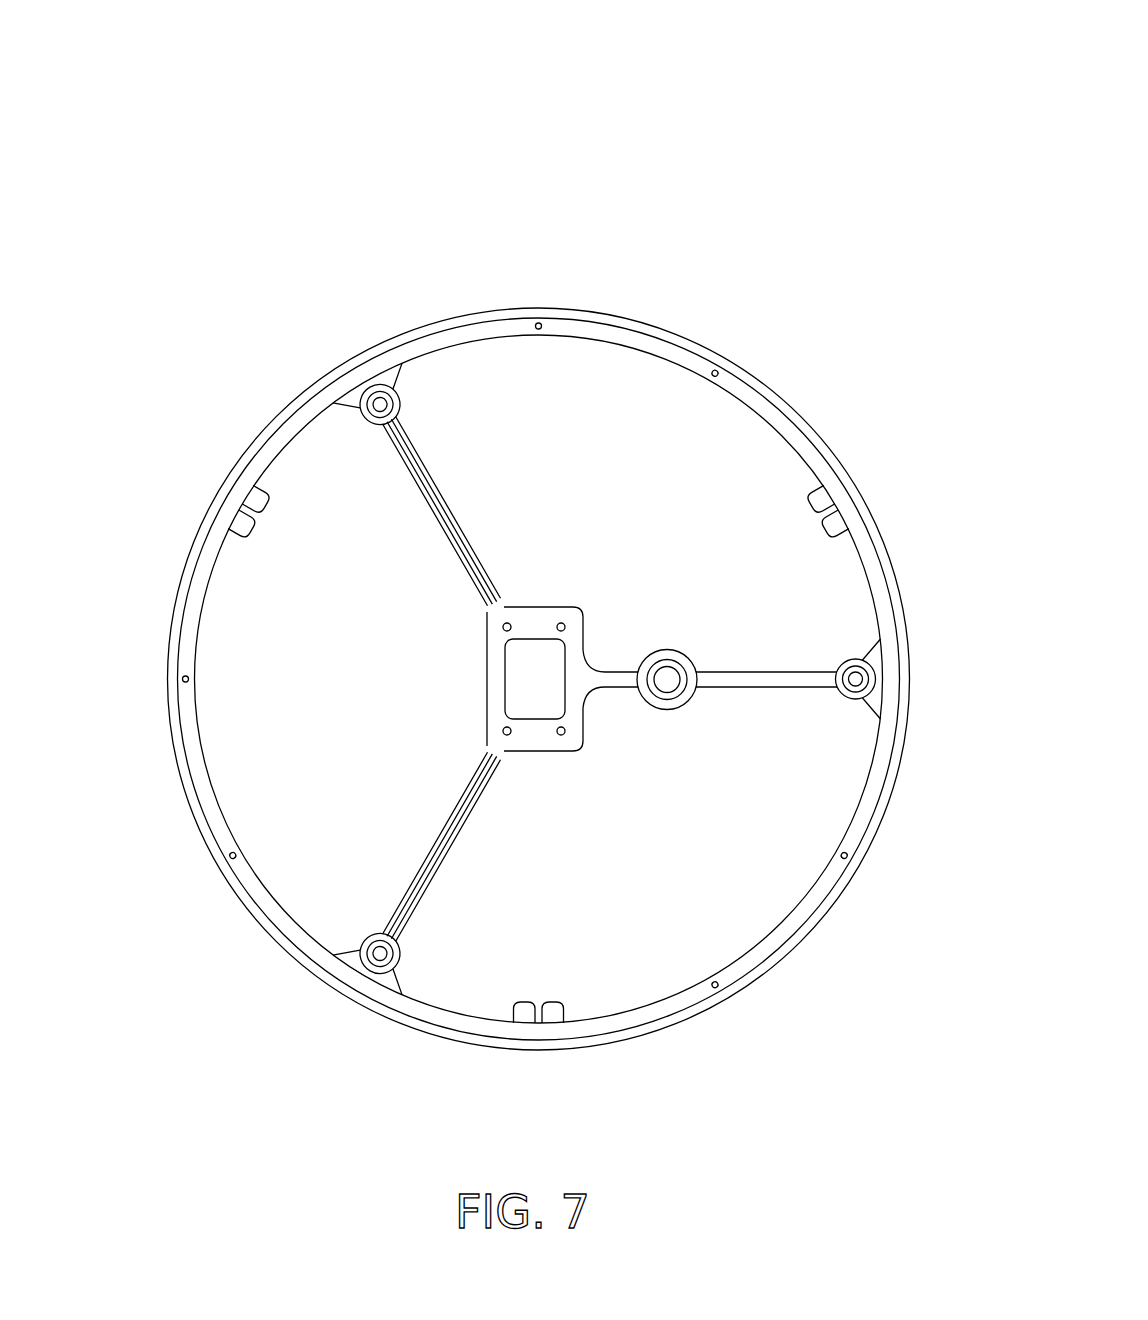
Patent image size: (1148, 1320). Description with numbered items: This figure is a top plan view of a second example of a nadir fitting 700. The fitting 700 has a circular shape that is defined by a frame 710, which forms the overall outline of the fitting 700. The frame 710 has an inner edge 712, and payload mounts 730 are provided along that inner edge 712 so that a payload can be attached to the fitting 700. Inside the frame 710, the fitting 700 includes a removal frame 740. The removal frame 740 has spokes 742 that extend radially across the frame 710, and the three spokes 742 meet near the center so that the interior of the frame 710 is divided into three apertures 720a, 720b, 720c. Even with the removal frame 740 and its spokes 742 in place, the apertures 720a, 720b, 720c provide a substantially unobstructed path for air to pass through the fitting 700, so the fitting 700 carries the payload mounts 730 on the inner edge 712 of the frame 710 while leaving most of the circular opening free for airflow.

The nadir fitting 700 is at (194, 56).
The frame 710 is at (281, 386).
The inner edge 712 is at (204, 599).
The aperture 720a is at (723, 512).
The aperture 720b is at (299, 588).
The aperture 720c is at (596, 932).
The payload mount 730 is at (400, 402).
The removal frame 740 is at (450, 487).
The spoke 742 is at (435, 882).